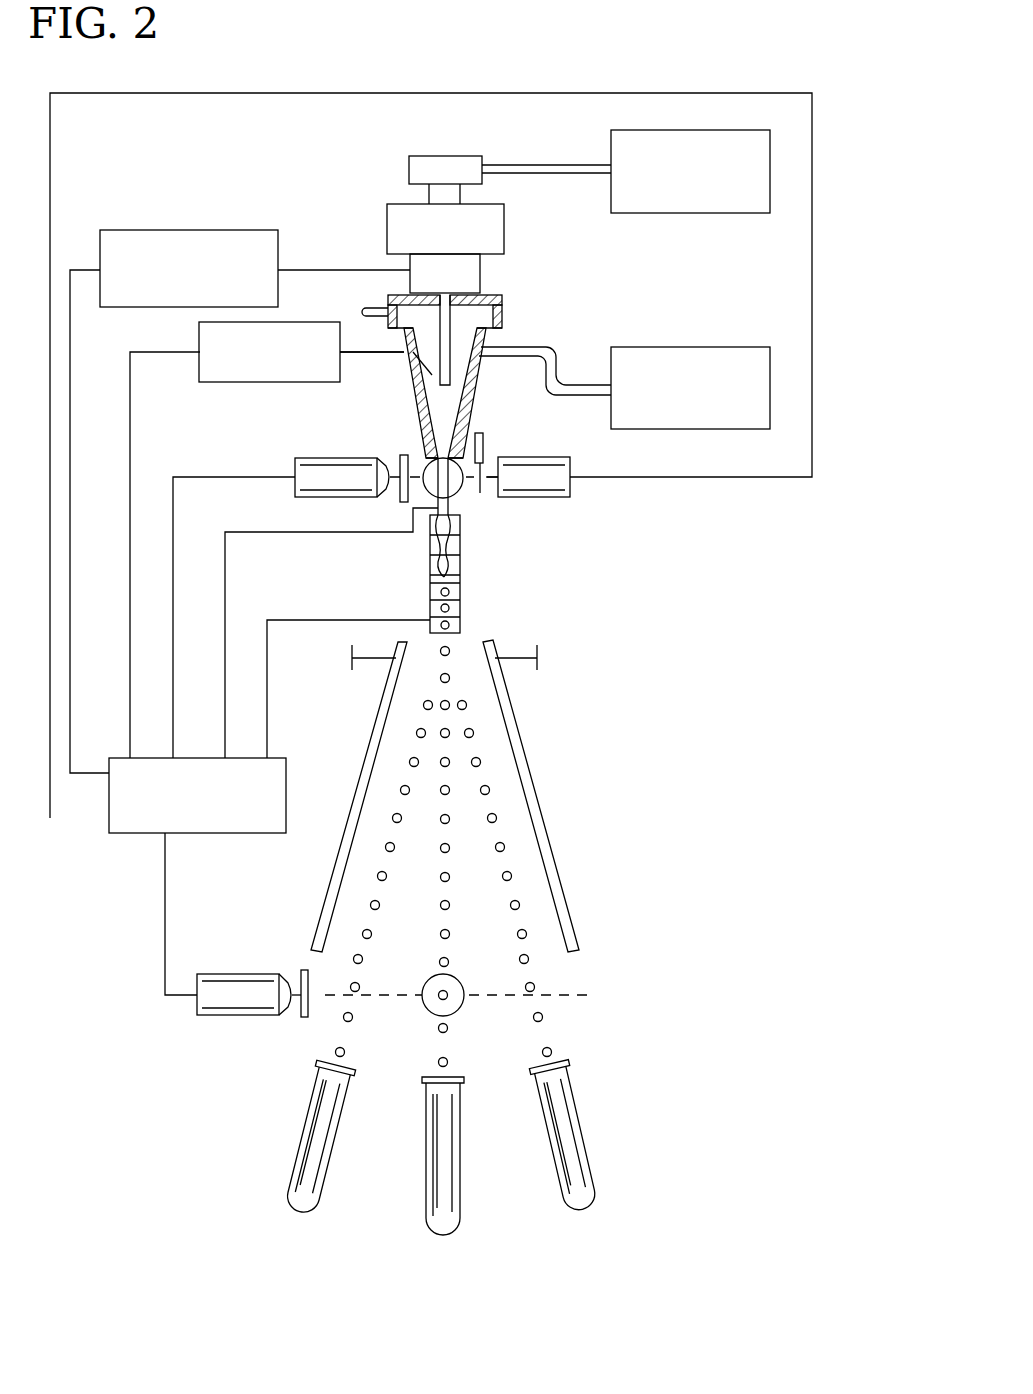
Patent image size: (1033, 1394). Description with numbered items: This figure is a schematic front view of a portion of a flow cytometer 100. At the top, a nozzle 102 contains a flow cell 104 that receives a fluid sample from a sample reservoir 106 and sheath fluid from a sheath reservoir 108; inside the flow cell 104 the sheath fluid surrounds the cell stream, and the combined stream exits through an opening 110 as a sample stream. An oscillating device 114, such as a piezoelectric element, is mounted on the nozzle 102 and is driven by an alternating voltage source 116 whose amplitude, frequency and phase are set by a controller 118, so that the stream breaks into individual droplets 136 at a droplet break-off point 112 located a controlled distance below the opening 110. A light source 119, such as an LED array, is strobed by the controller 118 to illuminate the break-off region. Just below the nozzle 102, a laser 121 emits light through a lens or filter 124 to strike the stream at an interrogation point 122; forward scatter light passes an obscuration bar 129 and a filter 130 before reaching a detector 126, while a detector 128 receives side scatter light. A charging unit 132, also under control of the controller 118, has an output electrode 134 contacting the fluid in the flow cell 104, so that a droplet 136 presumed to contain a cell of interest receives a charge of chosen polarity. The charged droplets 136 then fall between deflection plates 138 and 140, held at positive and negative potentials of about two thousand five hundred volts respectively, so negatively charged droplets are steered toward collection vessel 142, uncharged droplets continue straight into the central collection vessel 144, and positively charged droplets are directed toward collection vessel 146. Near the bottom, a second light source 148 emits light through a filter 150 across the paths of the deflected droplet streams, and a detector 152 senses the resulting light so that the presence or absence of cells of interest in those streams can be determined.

The flow cytometer 100 is at (700, 718).
The nozzle 102 is at (510, 292).
The flow cell 104 is at (438, 420).
The sample reservoir 106 is at (697, 213).
The sheath reservoir 108 is at (655, 347).
The opening 110 is at (447, 458).
The droplet break-off point 112 is at (448, 575).
The oscillating device 114 is at (483, 280).
The alternating voltage source 116 is at (185, 230).
The controller 118 is at (129, 833).
The light source 119 is at (462, 610).
The laser 121 is at (294, 470).
The interrogation point 122 is at (432, 468).
The lens or filter 124 is at (403, 456).
The detector 126 is at (571, 463).
The detector 128 is at (456, 492).
The obscuration bar 129 is at (488, 450).
The filter 130 is at (497, 486).
The charging unit 132 is at (293, 322).
The output electrode 134 is at (352, 350).
The droplets 136 is at (452, 585).
The deflection plate 138 is at (320, 900).
The deflection plate 140 is at (543, 813).
The collection vessel 142 is at (290, 1180).
The central collection vessel 144 is at (425, 1203).
The collection vessel 146 is at (590, 1148).
The second light source 148 is at (197, 996).
The filter 150 is at (305, 1017).
The detector 152 is at (464, 998).